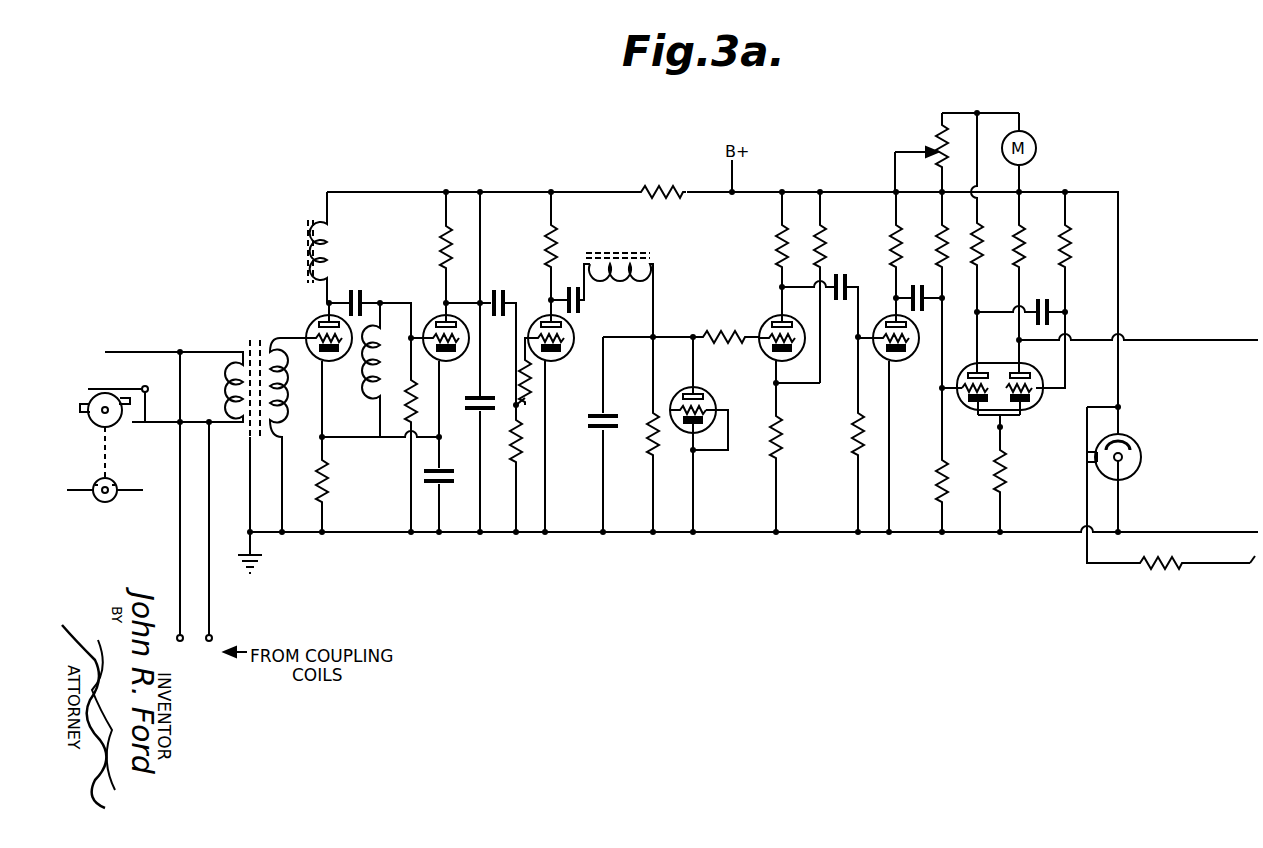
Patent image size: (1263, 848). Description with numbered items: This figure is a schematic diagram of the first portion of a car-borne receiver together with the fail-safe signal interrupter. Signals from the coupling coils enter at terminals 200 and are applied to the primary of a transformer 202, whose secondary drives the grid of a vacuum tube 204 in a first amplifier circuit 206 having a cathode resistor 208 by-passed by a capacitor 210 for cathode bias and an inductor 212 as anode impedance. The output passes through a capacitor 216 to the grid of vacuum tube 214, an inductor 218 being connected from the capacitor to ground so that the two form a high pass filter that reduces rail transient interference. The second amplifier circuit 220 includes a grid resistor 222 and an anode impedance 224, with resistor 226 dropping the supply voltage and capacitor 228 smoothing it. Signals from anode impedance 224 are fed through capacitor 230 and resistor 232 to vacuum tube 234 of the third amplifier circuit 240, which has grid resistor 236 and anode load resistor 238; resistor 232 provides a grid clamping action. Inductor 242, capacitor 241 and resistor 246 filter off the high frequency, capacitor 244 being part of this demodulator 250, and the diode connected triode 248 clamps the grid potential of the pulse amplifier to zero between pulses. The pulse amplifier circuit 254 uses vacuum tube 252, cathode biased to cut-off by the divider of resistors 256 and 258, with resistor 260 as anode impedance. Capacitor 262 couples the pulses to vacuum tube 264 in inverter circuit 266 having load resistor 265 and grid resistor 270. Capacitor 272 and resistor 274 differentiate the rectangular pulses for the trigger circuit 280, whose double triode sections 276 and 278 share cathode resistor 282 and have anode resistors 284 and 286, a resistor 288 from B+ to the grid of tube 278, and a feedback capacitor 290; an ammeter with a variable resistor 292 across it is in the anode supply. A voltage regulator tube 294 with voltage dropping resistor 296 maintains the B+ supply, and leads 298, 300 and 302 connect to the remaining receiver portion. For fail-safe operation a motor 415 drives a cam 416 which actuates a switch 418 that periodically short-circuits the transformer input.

The terminals 200 is at (199, 513).
The transformer 202 is at (273, 331).
The vacuum tube 204 is at (340, 355).
The amplifier circuit 206 is at (350, 299).
The cathode resistor 208 is at (330, 478).
The by-passing capacitor 210 is at (450, 484).
The inductor 212 is at (336, 251).
The vacuum tube 214 is at (450, 355).
The capacitor 216 is at (386, 320).
The inductor 218 is at (368, 398).
The second amplifier circuit 220 is at (504, 299).
The grid resistor 222 is at (420, 421).
The anode impedance 224 is at (441, 231).
The voltage dropping resistor 226 is at (686, 177).
The smoothing capacitor 228 is at (488, 396).
The capacitor 230 is at (520, 270).
The resistor 232 is at (541, 367).
The vacuum tube 234 is at (574, 332).
The grid resistor 236 is at (510, 461).
The anode load resistor 238 is at (558, 234).
The third amplifier circuit 240 is at (633, 327).
The capacitor 241 is at (618, 283).
The inductor 242 is at (634, 284).
The filter capacitor 244 is at (594, 424).
The resistor 246 is at (643, 458).
The diode connected triode 248 is at (718, 390).
The demodulator 250 is at (698, 375).
The vacuum tube 252 is at (770, 359).
The pulse amplifier circuit 254 is at (763, 310).
The resistor 256 is at (823, 233).
The resistor 258 is at (781, 446).
The resistor 260 is at (777, 221).
The capacitor 262 is at (843, 276).
The vacuum tube 264 is at (932, 380).
The plate load resistor 265 is at (902, 225).
The circuit 266 is at (878, 346).
The grid resistor 270 is at (853, 419).
The capacitor 272 is at (920, 287).
The resistor 274 is at (940, 484).
The vacuum tube 276 is at (957, 404).
The vacuum tube 278 is at (1044, 398).
The trigger circuit 280 is at (1072, 402).
The cathode resistor 282 is at (1007, 484).
The anode resistor 284 is at (978, 270).
The anode resistor 286 is at (1017, 263).
The resistor 288 is at (1070, 241).
The feedback capacitor 290 is at (1053, 312).
The variable resistor 292 is at (937, 131).
The voltage regulator tube 294 is at (1143, 453).
The voltage dropping resistor 296 is at (1170, 584).
The lead 298 is at (1198, 339).
The lead 300 is at (1227, 579).
The lead 302 is at (1227, 527).
The motor 415 is at (106, 477).
The cam 416 is at (123, 425).
The switch 418 is at (104, 372).